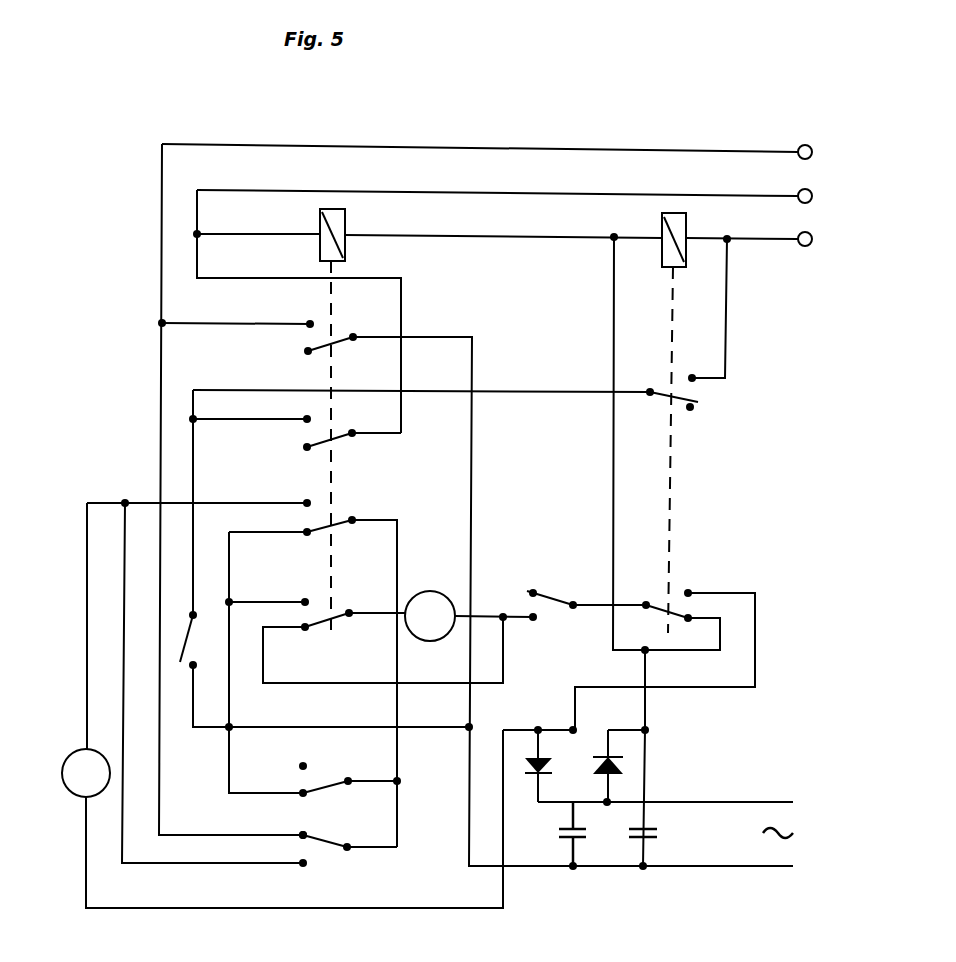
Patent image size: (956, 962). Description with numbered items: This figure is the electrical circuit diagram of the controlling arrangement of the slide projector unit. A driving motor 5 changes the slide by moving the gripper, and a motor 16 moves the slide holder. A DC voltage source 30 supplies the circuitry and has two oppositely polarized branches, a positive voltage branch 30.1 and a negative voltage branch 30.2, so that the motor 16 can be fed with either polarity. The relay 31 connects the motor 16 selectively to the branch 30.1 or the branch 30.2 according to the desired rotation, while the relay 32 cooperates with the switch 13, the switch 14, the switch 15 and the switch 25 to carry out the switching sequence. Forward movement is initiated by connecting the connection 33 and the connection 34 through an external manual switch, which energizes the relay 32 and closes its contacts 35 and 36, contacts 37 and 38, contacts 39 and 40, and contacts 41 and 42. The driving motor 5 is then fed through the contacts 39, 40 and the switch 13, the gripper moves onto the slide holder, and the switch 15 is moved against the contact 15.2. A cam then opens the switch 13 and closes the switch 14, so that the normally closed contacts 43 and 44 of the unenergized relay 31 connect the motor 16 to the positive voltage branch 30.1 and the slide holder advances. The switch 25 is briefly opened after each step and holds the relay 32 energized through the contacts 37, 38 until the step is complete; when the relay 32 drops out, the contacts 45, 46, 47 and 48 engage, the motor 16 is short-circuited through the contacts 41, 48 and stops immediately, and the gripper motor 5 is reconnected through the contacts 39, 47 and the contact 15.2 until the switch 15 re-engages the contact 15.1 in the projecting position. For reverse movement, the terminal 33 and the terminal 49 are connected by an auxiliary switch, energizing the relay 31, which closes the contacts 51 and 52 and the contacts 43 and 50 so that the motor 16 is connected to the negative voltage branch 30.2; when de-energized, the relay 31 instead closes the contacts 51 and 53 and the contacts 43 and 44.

The driving motor 5 is at (96, 793).
The switch 13 is at (328, 783).
The switch 14 is at (553, 597).
The switch 15 is at (335, 840).
The contact 15.1 is at (303, 833).
The contact 15.2 is at (305, 866).
The motor 16 is at (430, 591).
The switch 25 is at (188, 643).
The DC voltage source 30 is at (615, 824).
The positive voltage branch 30.1 is at (580, 785).
The negative voltage branch 30.2 is at (559, 745).
The relay 31 is at (670, 253).
The relay 32 is at (343, 253).
The connection 33 is at (797, 144).
The connection 34 is at (797, 193).
The relay contact 35 is at (356, 336).
The relay contact 36 is at (309, 320).
The relay contact 37 is at (354, 432).
The relay contact 38 is at (300, 409).
The relay contact 39 is at (355, 518).
The relay contact 40 is at (299, 491).
The relay contact 41 is at (351, 612).
The relay contact 42 is at (305, 597).
The relay contact 43 is at (646, 610).
The relay contact 44 is at (684, 621).
The relay contact 45 is at (308, 355).
The relay contact 46 is at (307, 451).
The relay contact 47 is at (307, 537).
The relay contact 48 is at (305, 632).
The terminal 49 is at (797, 236).
The relay contact 50 is at (690, 592).
The relay contact 51 is at (650, 389).
The relay contact 52 is at (693, 375).
The relay contact 53 is at (693, 411).